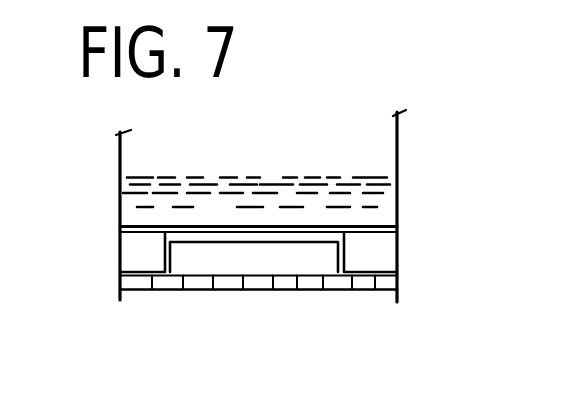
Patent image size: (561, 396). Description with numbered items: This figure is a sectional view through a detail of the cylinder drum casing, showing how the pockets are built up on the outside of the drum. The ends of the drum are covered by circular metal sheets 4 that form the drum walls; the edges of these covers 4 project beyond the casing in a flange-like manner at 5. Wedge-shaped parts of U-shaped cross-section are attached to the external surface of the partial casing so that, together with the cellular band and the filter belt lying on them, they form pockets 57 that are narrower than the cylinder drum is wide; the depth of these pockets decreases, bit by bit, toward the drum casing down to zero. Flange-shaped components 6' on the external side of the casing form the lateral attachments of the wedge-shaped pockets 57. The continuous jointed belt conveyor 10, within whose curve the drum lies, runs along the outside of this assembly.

The circular metal sheet cover 4 is at (120, 156).
The flange-shaped component 6' is at (251, 247).
The flange-shaped edge 5 is at (120, 299).
The pocket 57 is at (270, 258).
The jointed belt conveyor 10 is at (173, 290).